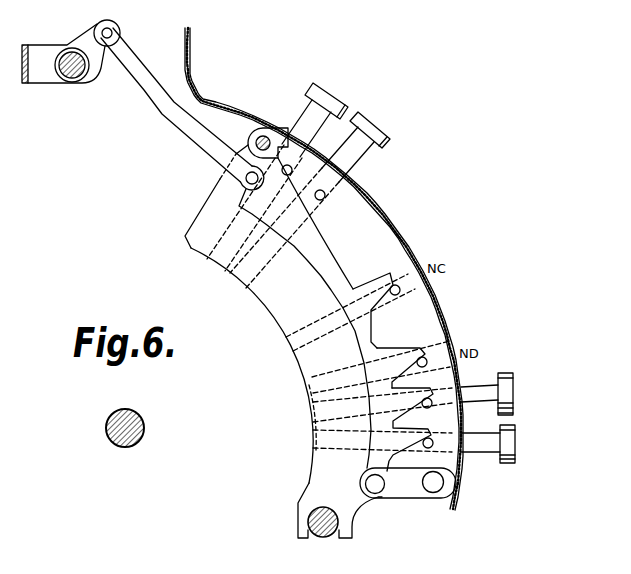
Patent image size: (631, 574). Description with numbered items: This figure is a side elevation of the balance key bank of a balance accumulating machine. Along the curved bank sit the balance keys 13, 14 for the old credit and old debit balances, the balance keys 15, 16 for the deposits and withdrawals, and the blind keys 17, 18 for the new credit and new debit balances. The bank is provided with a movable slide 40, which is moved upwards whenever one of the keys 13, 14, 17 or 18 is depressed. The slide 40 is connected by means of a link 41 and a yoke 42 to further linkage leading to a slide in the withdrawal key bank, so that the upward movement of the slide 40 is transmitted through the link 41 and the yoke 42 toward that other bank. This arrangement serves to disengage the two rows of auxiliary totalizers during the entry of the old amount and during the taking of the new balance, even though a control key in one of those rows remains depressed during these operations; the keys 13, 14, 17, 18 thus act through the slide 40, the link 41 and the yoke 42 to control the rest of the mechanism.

The balance key 13 is at (506, 373).
The balance key 14 is at (503, 464).
The balance key 15 is at (309, 90).
The balance key 16 is at (386, 143).
The blind key 17 is at (408, 276).
The blind key 18 is at (430, 347).
The slide 40 is at (325, 278).
The link 41 is at (167, 114).
The yoke 42 is at (55, 84).